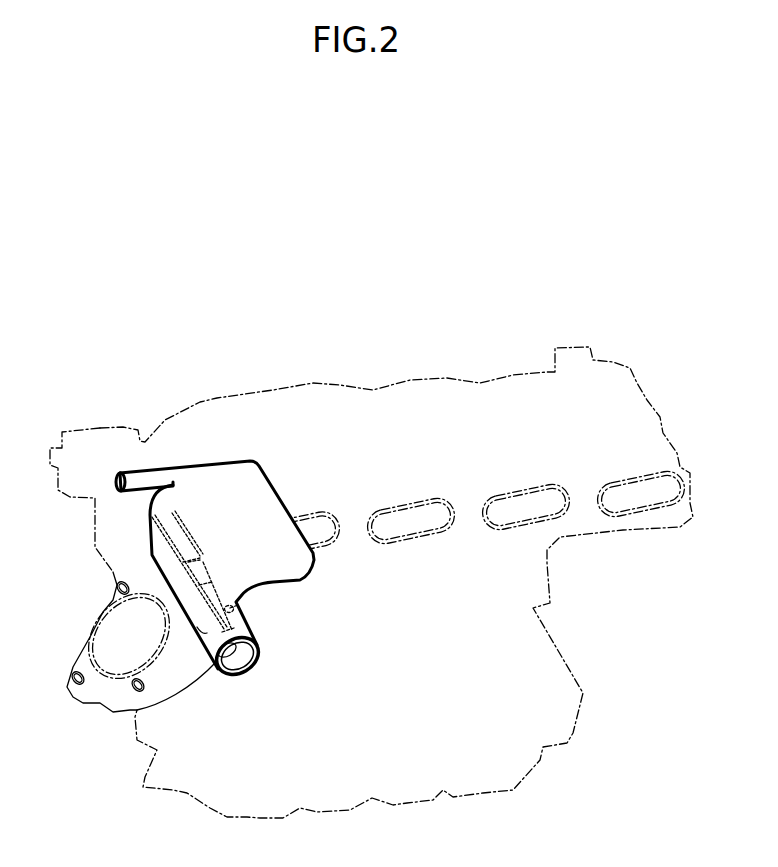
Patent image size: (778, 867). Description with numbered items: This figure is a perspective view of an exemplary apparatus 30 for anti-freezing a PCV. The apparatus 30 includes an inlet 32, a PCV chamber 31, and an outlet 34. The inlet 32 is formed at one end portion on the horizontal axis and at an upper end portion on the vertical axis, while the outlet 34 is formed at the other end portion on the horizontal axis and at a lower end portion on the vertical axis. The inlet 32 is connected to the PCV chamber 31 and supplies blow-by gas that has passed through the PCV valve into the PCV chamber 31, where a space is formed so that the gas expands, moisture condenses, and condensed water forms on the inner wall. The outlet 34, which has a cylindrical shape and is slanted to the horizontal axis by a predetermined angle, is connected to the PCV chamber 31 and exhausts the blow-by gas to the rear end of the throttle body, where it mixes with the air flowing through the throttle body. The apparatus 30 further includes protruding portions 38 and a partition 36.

The apparatus for anti-freezing a PCV 30 is at (222, 506).
The PCV chamber 31 is at (210, 495).
The inlet 32 is at (137, 477).
The outlet 34 is at (137, 712).
The partition 36 is at (207, 587).
The protruding portions 38 is at (188, 530).